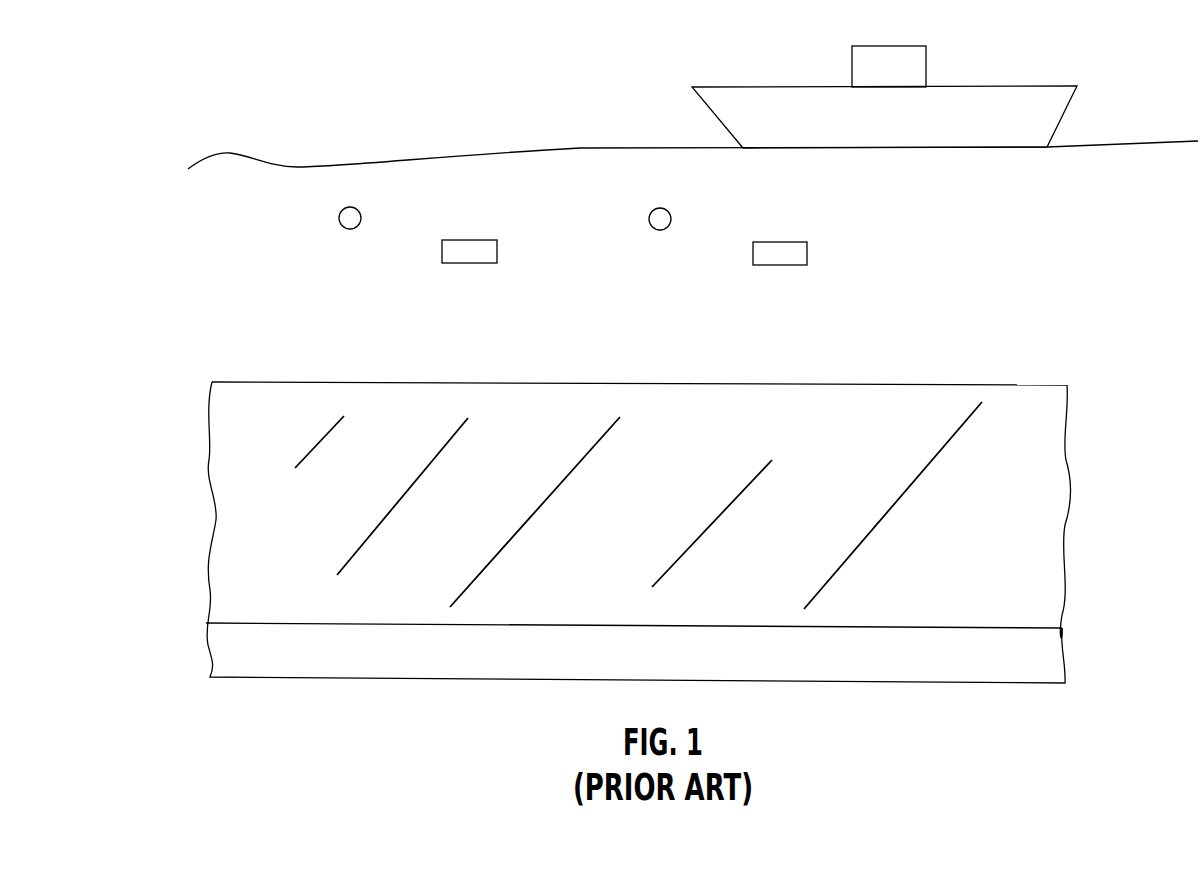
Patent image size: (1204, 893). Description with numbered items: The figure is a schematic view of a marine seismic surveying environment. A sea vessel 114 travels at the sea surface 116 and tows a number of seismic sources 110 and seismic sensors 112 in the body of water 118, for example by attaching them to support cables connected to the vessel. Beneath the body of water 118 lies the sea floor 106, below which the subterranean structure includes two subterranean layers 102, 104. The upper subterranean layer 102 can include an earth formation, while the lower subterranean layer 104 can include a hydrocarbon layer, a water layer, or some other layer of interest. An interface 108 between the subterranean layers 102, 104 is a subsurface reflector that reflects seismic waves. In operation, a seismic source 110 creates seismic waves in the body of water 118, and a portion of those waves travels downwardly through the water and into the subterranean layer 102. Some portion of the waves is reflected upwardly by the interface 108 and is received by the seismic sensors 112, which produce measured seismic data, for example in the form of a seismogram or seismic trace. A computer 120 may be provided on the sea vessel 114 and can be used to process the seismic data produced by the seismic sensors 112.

The subterranean layer 102 is at (1052, 513).
The subterranean layer 104 is at (1055, 648).
The sea floor 106 is at (848, 383).
The interface 108 is at (1010, 628).
The seismic source 110 is at (359, 208).
The seismic sensor 112 is at (470, 240).
The sea vessel 114 is at (1043, 100).
The sea surface 116 is at (470, 152).
The body of water 118 is at (1038, 245).
The computer 120 is at (913, 55).